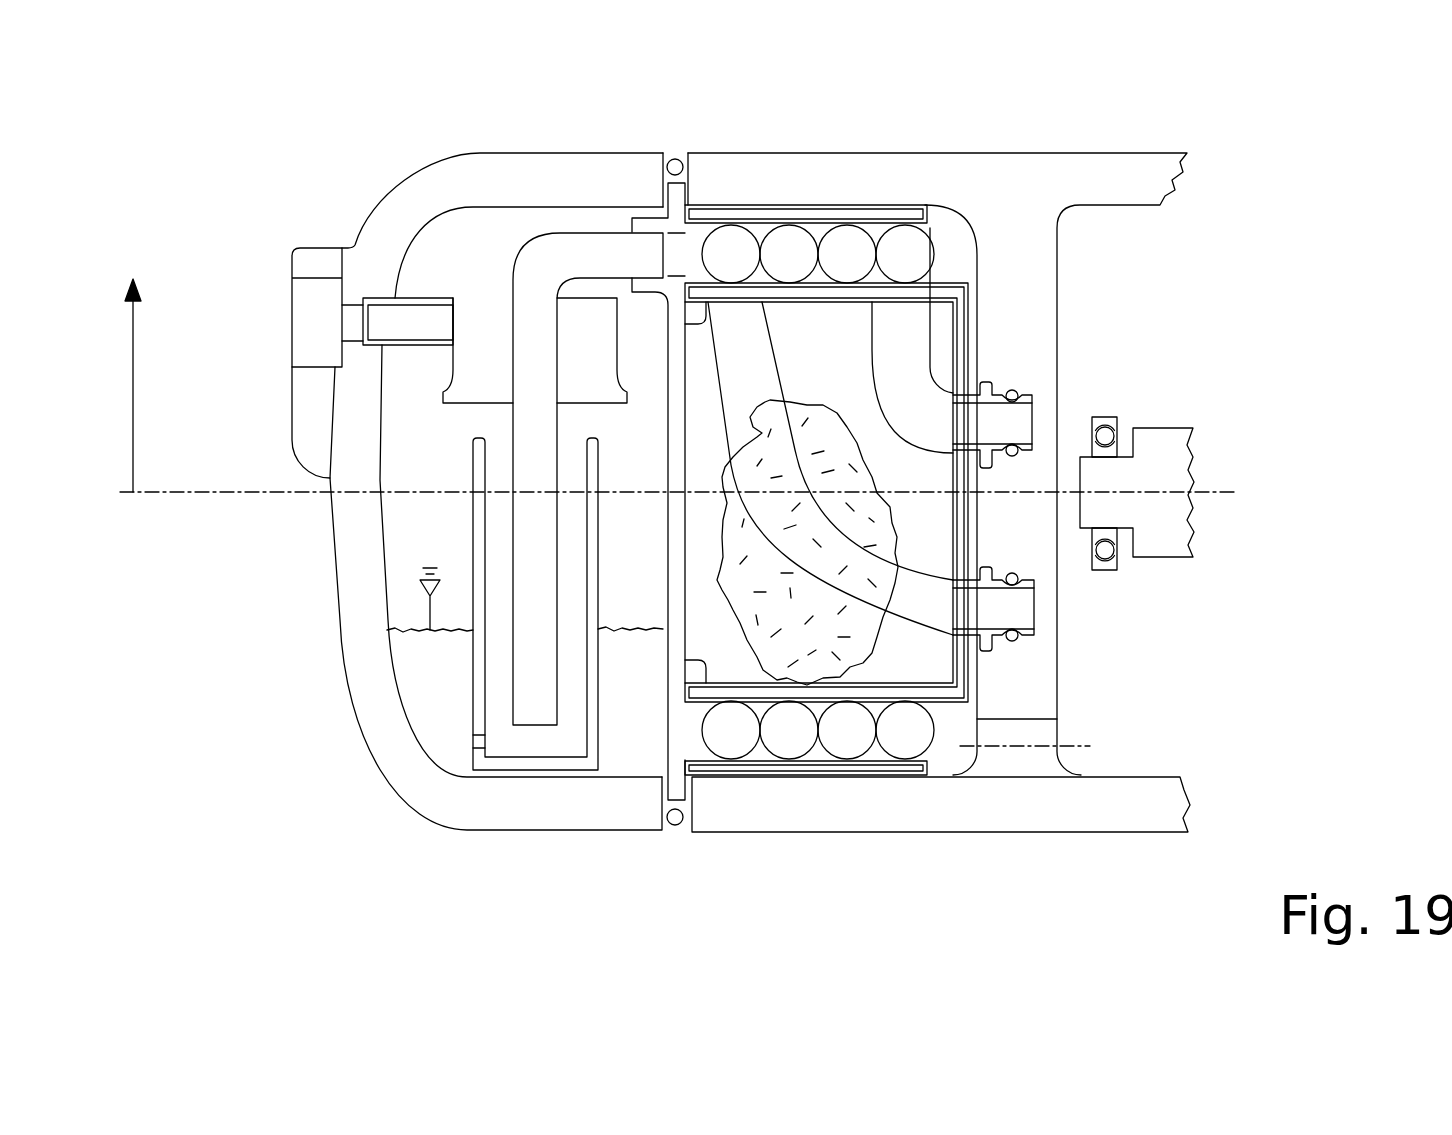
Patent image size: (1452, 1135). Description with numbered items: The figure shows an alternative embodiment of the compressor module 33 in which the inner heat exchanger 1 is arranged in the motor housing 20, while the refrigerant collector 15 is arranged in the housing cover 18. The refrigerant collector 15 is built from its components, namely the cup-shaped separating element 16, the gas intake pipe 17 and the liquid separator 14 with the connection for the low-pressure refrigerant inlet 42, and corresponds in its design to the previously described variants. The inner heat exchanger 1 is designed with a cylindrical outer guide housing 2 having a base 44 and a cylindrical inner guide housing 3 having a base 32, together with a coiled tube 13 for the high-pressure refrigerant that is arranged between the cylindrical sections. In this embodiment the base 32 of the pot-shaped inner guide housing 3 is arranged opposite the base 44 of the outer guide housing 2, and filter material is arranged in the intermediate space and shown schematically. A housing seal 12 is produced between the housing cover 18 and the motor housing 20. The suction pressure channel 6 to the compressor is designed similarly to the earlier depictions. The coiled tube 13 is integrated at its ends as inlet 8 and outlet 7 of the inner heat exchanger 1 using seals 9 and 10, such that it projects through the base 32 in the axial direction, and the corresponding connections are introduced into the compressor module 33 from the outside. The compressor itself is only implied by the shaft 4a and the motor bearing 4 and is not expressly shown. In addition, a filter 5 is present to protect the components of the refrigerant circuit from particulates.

The inner heat exchanger 1 is at (788, 245).
The cylindrical outer guide housing 2 is at (838, 213).
The cylindrical inner guide housing 3 is at (877, 293).
The motor bearing 4 is at (1113, 547).
The shaft 4a is at (1185, 442).
The filter 5 is at (944, 242).
The suction pressure channel 6 is at (1022, 758).
The outlet 7 is at (1023, 423).
The inlet 8 is at (1027, 615).
The seal 9 is at (1013, 577).
The seal 10 is at (1012, 458).
The housing seal 12 is at (677, 157).
The coiled tube 13 is at (790, 740).
The liquid separator 14 is at (478, 320).
The refrigerant collector 15 is at (413, 660).
The cup-shaped separating element 16 is at (473, 462).
The gas intake pipe 17 is at (555, 255).
The housing cover 18 is at (448, 178).
The motor housing 20 is at (880, 807).
The base 32 is at (958, 390).
The compressor module 33 is at (1272, 163).
The connection for the low-pressure refrigerant inlet 42 is at (310, 318).
The base 44 is at (675, 570).